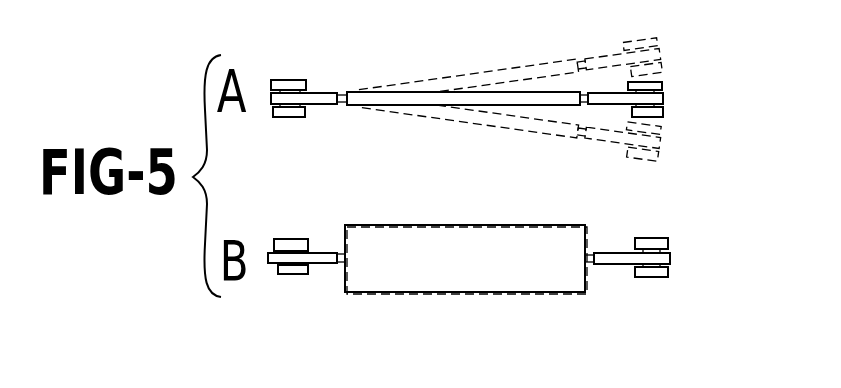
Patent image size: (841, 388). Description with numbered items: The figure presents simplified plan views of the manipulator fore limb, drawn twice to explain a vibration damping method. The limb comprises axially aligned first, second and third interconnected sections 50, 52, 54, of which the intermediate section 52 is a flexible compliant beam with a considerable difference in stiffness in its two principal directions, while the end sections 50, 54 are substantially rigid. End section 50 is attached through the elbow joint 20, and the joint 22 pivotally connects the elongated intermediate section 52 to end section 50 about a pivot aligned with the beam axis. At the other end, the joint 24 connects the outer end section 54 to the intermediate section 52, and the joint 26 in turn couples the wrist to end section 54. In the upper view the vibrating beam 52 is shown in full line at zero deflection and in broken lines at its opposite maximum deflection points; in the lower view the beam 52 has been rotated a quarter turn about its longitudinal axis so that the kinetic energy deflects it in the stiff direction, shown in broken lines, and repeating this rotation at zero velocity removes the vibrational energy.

The elbow joint 20 is at (265, 82).
The joint 22 is at (340, 86).
The joint 24 is at (581, 107).
The joint 26 is at (668, 91).
The first end section 50 is at (318, 108).
The intermediate section 52 is at (407, 92).
The end section 54 is at (600, 92).